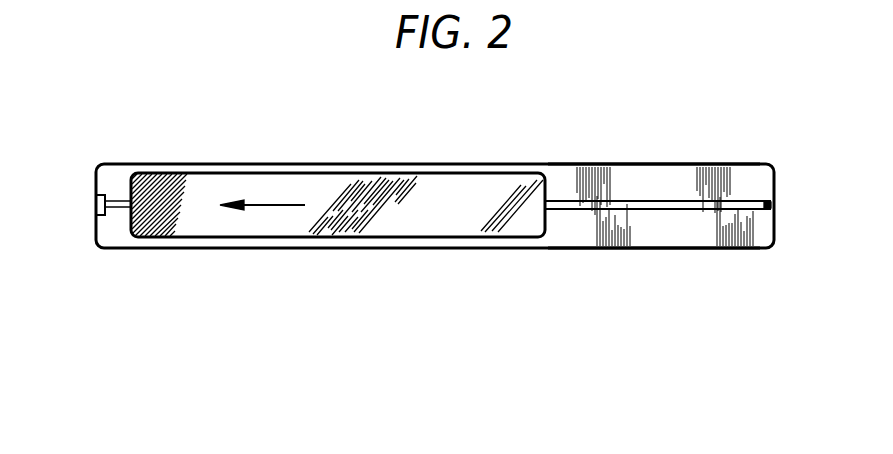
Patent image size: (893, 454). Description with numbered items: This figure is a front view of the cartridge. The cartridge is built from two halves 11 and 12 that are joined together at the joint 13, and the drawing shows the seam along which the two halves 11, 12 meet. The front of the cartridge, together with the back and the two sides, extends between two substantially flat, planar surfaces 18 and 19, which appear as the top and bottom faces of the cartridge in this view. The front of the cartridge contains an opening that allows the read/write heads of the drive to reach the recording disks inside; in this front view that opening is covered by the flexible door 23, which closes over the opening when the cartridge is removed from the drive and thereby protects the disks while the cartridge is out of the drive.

The cartridge half 11 is at (745, 174).
The cartridge half 12 is at (700, 232).
The joint 13 is at (96, 205).
The planar surface 18 is at (550, 244).
The planar surface 19 is at (550, 173).
The flexible door 23 is at (462, 186).